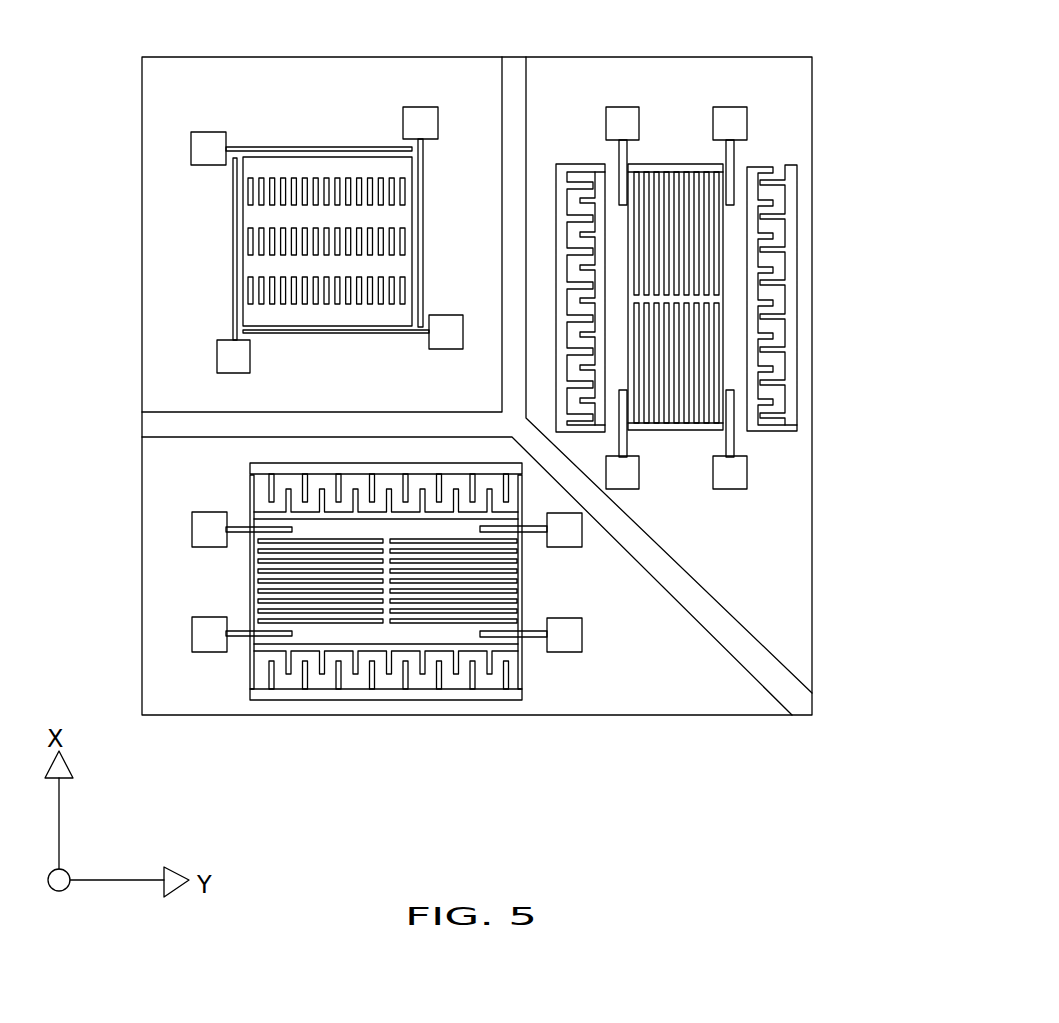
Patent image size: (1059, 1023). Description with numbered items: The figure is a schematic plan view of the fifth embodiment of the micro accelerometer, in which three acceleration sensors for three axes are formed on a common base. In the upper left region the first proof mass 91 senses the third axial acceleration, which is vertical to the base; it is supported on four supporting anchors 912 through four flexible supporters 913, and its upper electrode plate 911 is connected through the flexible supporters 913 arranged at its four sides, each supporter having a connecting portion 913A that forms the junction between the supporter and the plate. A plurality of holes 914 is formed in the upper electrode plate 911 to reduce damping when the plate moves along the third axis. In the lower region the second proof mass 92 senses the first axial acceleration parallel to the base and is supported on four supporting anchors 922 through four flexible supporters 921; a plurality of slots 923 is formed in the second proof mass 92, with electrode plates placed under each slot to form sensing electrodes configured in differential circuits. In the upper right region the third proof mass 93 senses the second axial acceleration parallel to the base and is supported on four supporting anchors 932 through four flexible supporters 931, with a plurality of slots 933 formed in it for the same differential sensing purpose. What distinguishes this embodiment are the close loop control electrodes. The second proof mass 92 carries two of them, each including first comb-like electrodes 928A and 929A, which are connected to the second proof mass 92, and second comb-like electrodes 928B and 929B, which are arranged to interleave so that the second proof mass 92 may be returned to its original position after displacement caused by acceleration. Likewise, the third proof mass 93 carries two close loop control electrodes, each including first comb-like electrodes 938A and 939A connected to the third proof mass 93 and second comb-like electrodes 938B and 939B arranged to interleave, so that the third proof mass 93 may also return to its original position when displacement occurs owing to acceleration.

The first proof mass 91 is at (328, 113).
The upper electrode plate 911 is at (273, 165).
The supporting anchor 912 is at (195, 149).
The flexible supporter 913 is at (423, 238).
The connecting portion 913A is at (393, 148).
The hole 914 is at (270, 242).
The third proof mass 93 is at (738, 353).
The flexible supporter 931 is at (735, 153).
The supporting anchor 932 is at (737, 106).
The slot 933 is at (715, 248).
The first comb-like electrode 938A is at (765, 168).
The second comb-like electrode 938B is at (772, 185).
The first comb-like electrode 939A is at (596, 163).
The second comb-like electrode 939B is at (575, 178).
The second proof mass 92 is at (380, 640).
The flexible supporter 921 is at (537, 637).
The supporting anchor 922 is at (582, 647).
The slot 923 is at (448, 622).
The first comb-like electrode 928A is at (252, 495).
The second comb-like electrode 928B is at (270, 482).
The first comb-like electrode 929A is at (252, 663).
The second comb-like electrode 929B is at (268, 680).